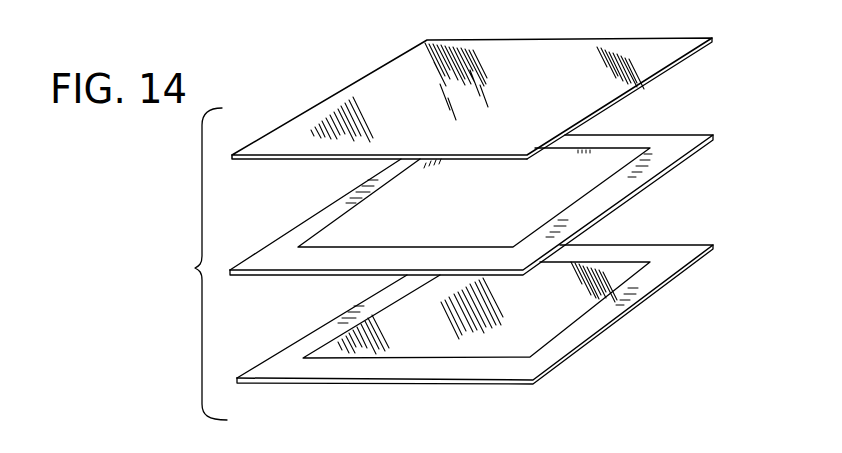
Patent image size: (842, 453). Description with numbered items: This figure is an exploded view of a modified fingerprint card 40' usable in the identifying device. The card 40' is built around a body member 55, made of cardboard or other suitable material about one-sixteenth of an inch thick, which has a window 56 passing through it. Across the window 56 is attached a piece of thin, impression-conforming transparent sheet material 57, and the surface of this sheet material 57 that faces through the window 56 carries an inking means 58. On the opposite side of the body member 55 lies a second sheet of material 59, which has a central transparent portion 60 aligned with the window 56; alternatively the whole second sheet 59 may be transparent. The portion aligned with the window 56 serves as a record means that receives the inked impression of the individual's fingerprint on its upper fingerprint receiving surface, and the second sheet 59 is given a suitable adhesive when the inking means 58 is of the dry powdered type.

The fingerprint card 40' is at (495, 235).
The transparent sheet material 57 is at (266, 168).
The inking means 58 is at (348, 158).
The body member 55 is at (272, 283).
The window 56 is at (600, 186).
The second sheet of material 59 is at (273, 389).
The central transparent portion 60 is at (529, 314).